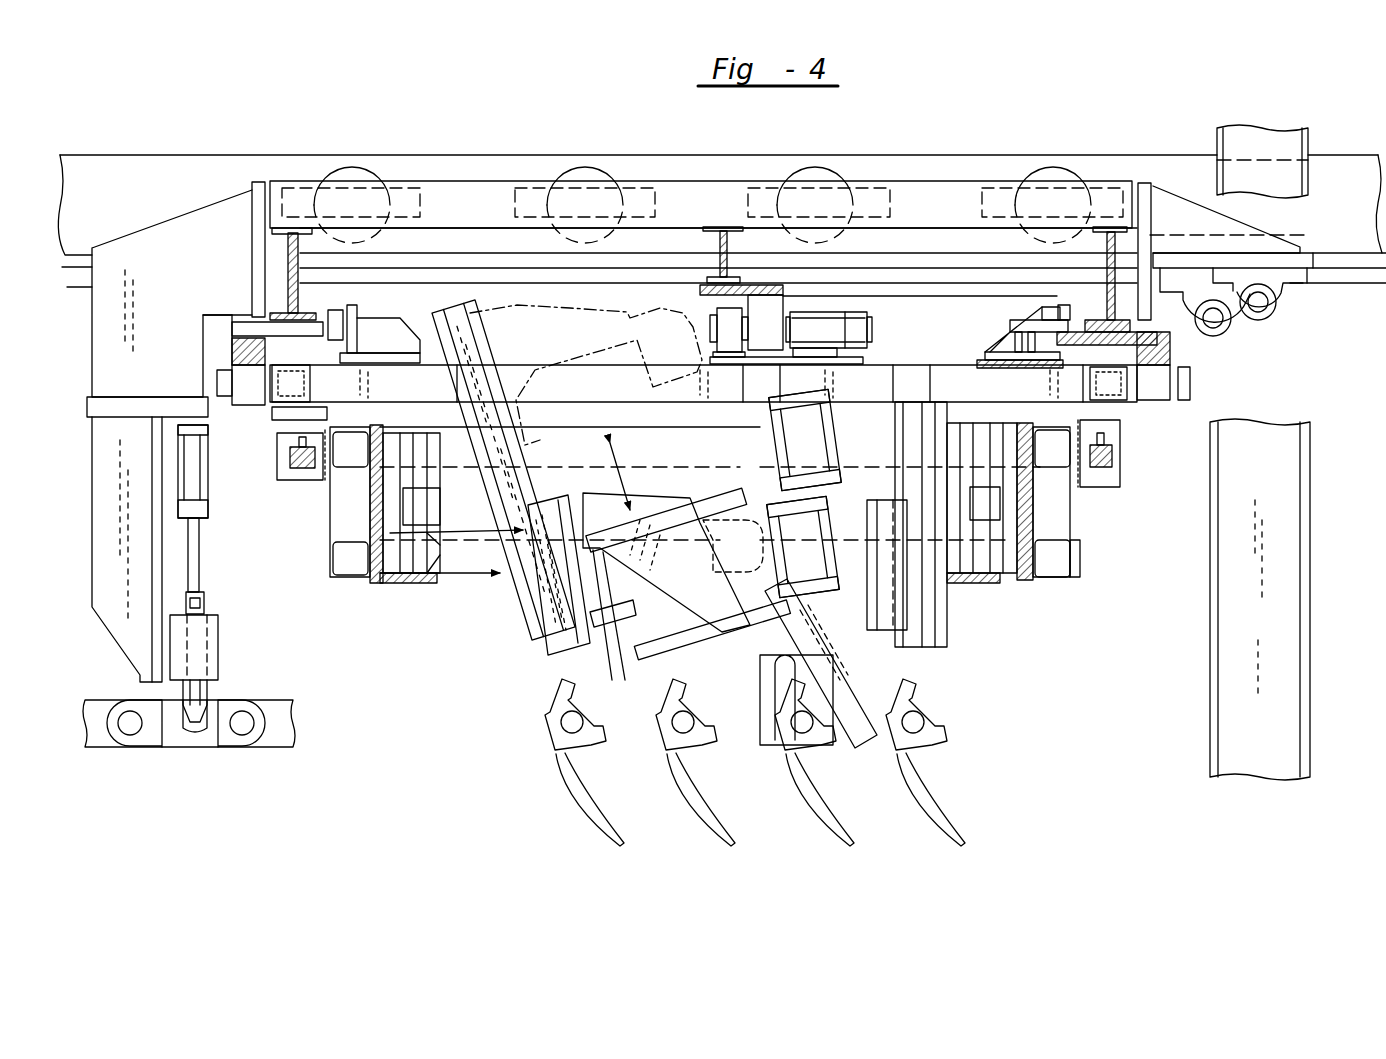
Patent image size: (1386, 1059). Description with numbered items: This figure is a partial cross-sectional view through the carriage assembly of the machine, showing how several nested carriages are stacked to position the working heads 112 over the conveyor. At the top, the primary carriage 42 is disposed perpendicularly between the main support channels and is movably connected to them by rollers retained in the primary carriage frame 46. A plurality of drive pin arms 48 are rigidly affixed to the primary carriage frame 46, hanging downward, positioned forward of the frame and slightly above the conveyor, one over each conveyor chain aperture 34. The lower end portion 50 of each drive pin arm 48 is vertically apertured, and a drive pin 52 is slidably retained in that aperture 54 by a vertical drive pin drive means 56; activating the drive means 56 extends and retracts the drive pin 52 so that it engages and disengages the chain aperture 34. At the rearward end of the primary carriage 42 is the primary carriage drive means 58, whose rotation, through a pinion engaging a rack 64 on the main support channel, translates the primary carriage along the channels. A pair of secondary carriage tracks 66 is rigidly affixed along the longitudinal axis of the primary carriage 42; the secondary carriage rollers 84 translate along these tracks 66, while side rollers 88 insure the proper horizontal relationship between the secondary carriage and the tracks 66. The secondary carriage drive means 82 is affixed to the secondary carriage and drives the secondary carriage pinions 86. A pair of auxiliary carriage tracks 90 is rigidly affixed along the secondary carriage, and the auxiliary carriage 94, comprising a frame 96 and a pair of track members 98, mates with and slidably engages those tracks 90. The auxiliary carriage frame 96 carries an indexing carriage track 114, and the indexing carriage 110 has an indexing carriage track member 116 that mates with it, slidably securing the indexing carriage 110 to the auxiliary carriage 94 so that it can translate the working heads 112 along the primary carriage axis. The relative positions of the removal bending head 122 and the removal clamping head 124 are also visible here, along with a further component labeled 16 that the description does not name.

The hook 16 is at (585, 822).
The conveyor chain aperture 34 is at (192, 745).
The primary carriage 42 is at (948, 150).
The primary carriage frame 46 is at (950, 192).
The drive pin arm 48 is at (169, 436).
The lower end portion 50 is at (216, 636).
The drive pin 52 is at (206, 696).
The aperture 54 is at (205, 612).
The vertical drive pin drive means 56 is at (197, 488).
The primary carriage drive means 58 is at (1272, 306).
The rack 64 is at (256, 404).
The secondary carriage track 66 is at (1150, 340).
The secondary carriage drive means 82 is at (840, 328).
The secondary carriage roller 84 is at (1068, 305).
The secondary carriage pinion 86 is at (1165, 385).
The side roller 88 is at (1038, 340).
The auxiliary carriage track 90 is at (300, 468).
The auxiliary carriage 94 is at (1075, 515).
The auxiliary carriage frame 96 is at (1068, 582).
The track member 98 is at (312, 482).
The indexing carriage 110 is at (968, 552).
The working head 112 is at (686, 586).
The indexing carriage track 114 is at (422, 562).
The indexing carriage track member 116 is at (450, 533).
The removal bending head 122 is at (852, 662).
The removal clamping head 124 is at (534, 642).